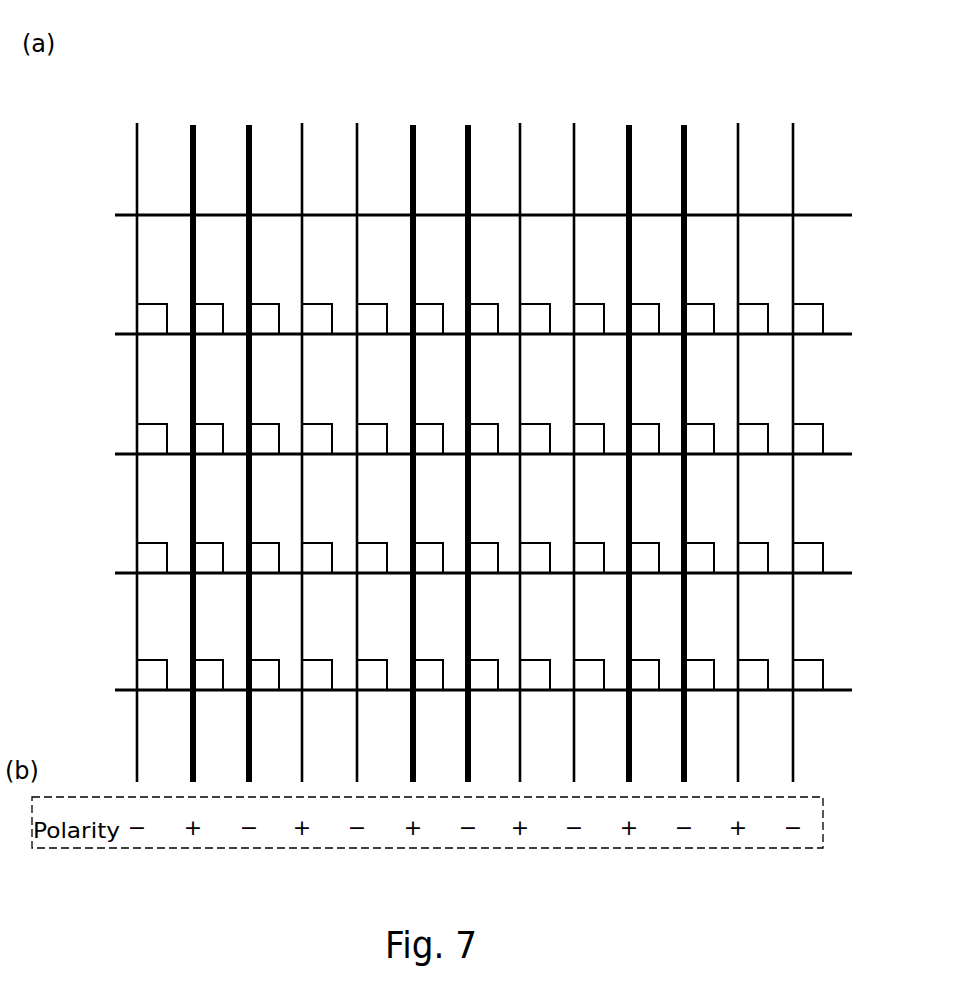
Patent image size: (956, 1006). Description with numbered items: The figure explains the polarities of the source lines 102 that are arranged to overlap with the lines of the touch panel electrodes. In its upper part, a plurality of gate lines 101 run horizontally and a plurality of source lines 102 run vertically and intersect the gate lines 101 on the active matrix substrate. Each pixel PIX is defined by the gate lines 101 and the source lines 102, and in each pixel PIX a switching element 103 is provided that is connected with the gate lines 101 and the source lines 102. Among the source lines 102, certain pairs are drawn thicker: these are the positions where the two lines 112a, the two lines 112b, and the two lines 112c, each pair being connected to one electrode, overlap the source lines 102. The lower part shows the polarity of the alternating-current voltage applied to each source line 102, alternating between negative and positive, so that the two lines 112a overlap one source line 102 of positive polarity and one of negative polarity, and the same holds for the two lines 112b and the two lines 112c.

The gate line 101 is at (116, 214).
The source line 102 is at (140, 141).
The switching element 103 is at (158, 303).
The lines 112a is at (196, 141).
The lines 112b is at (416, 141).
The lines 112c is at (632, 141).
The pixel PIX is at (775, 238).